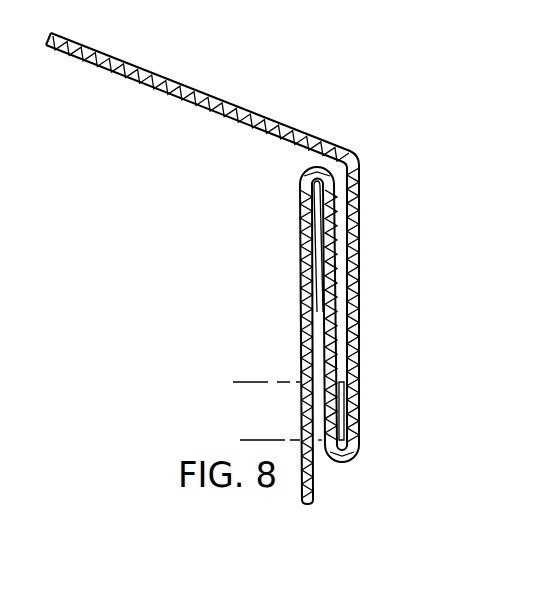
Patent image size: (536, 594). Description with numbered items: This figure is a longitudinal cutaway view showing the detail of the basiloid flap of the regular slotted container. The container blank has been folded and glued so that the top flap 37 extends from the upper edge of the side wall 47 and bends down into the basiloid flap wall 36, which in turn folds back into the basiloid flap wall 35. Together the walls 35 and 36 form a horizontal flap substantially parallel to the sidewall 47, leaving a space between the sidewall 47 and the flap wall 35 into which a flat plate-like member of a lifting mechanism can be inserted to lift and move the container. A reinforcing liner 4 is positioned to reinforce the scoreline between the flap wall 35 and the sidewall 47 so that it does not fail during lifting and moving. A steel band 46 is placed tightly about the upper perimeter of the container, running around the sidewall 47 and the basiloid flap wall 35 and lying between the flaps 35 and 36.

The top flap 37 is at (196, 89).
The basiloid flap wall 36 is at (360, 222).
The basiloid flap wall 35 is at (330, 340).
The side wall 47 is at (313, 473).
The reinforcing liner 4 is at (306, 220).
The steel band 46 is at (347, 407).